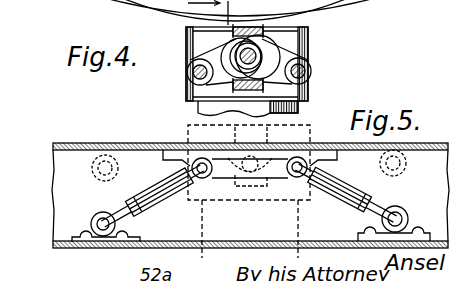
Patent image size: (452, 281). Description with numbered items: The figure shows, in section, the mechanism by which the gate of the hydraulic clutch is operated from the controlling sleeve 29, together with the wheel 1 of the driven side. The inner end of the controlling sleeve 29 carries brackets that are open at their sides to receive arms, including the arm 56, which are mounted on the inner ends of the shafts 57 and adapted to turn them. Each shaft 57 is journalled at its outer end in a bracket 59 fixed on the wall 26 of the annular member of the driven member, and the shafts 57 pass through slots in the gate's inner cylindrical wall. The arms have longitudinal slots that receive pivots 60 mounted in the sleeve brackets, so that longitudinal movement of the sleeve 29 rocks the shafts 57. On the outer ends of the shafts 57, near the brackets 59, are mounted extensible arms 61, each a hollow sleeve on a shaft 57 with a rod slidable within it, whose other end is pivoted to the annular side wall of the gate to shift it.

In FIG. 4, the wheel 1 is at (208, 15).
In FIG. 5, the wall 26 is at (118, 144).
In FIG. 4, the controlling sleeve 29 is at (191, 93).
In FIG. 4, the arm 56 is at (284, 52).
In FIG. 4, the shaft 57 is at (188, 71).
In FIG. 5, the shaft 57 is at (203, 173).
In FIG. 4, the bracket 59 is at (233, 39).
In FIG. 4, the pivot 60 is at (263, 37).
In FIG. 5, the extensible arm 61 is at (176, 200).